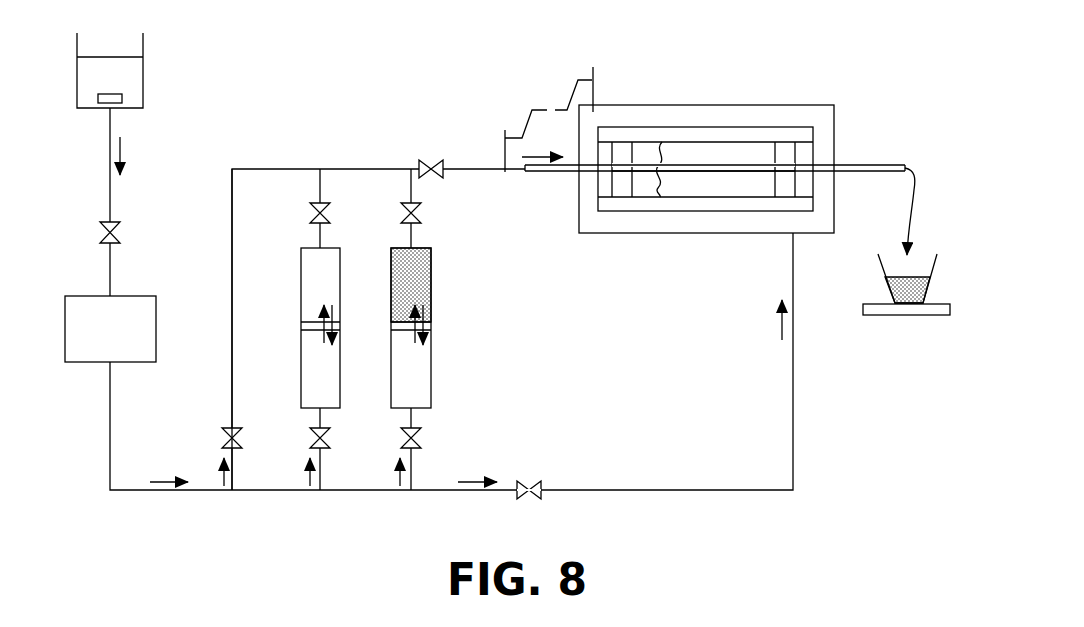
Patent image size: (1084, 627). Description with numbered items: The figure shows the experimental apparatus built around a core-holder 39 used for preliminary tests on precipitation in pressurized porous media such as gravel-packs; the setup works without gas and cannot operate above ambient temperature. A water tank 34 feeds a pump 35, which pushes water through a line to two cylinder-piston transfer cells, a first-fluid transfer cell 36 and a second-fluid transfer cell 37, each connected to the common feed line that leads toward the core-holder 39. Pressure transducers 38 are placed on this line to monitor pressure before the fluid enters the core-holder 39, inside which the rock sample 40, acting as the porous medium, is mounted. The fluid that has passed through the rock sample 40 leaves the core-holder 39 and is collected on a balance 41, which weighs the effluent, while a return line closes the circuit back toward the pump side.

The water tank 34 is at (143, 80).
The pump 35 is at (125, 295).
The transfer cell—fluid 1 36 is at (310, 300).
The transfer cell—fluid 2 37 is at (432, 292).
The pressure transducers 38 is at (548, 100).
The core-holder 39 is at (728, 105).
The rock sample 40 is at (714, 183).
The balance 41 is at (906, 316).